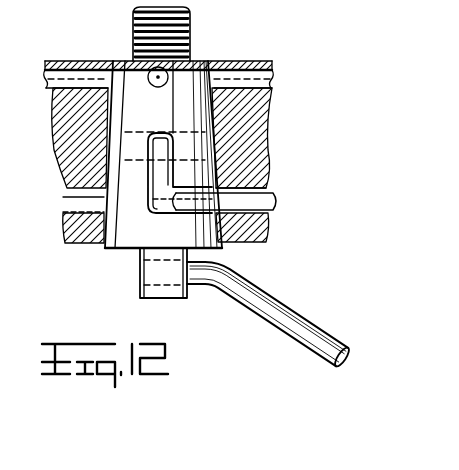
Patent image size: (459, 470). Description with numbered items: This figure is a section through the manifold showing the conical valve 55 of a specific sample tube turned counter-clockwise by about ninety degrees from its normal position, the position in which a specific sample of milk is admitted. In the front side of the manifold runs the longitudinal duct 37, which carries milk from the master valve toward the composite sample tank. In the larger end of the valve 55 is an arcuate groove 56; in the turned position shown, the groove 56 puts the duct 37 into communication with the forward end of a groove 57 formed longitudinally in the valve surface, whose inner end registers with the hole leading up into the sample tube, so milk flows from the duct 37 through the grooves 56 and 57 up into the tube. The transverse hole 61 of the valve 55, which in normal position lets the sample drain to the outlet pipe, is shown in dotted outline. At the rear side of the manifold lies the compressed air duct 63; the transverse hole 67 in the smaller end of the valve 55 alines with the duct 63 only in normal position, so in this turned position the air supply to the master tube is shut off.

The duct 37 is at (275, 202).
The valve 55 is at (162, 238).
The arcuate groove 56 is at (178, 203).
The groove 57 is at (165, 193).
The transverse hole 61 is at (125, 150).
The duct 63 is at (90, 78).
The transverse hole 67 is at (160, 76).